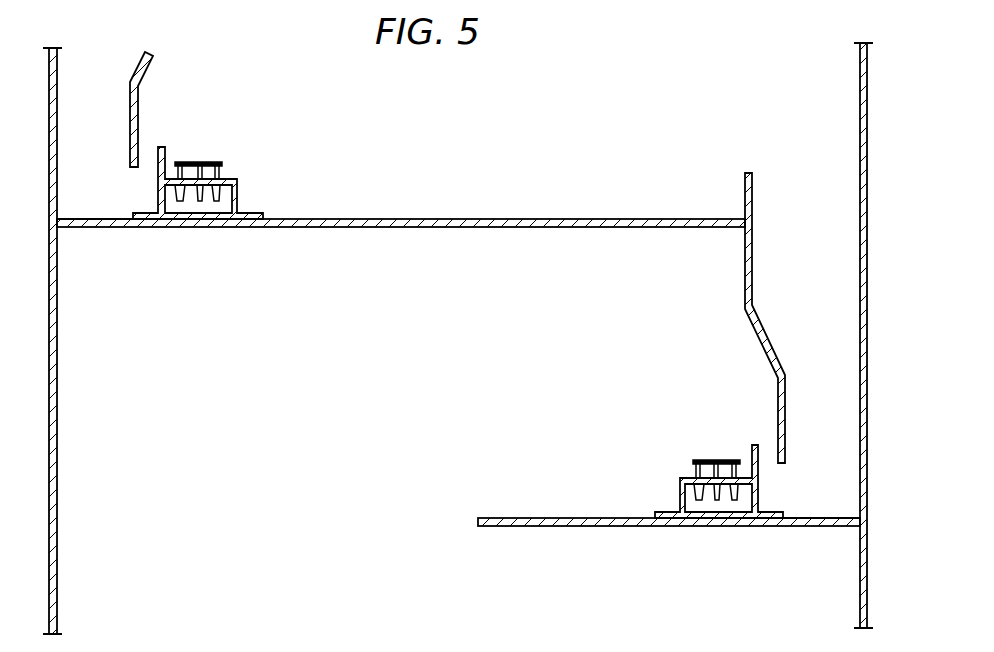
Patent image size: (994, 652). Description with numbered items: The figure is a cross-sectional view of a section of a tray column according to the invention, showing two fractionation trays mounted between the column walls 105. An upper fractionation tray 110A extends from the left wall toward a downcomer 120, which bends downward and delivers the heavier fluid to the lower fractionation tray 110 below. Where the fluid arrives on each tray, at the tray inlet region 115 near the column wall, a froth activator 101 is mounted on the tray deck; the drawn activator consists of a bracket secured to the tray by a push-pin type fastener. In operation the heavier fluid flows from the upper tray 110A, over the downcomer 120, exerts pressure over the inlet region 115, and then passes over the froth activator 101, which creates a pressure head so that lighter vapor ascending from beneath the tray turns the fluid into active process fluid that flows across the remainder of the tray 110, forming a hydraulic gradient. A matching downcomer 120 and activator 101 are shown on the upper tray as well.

The froth activator 101 is at (252, 166).
The side wall 105 is at (57, 342).
The fractionation tray 110 is at (551, 518).
The upper fractionation tray 110A is at (472, 218).
The tray inlet region 115 is at (99, 209).
The downcomer 120 is at (138, 97).